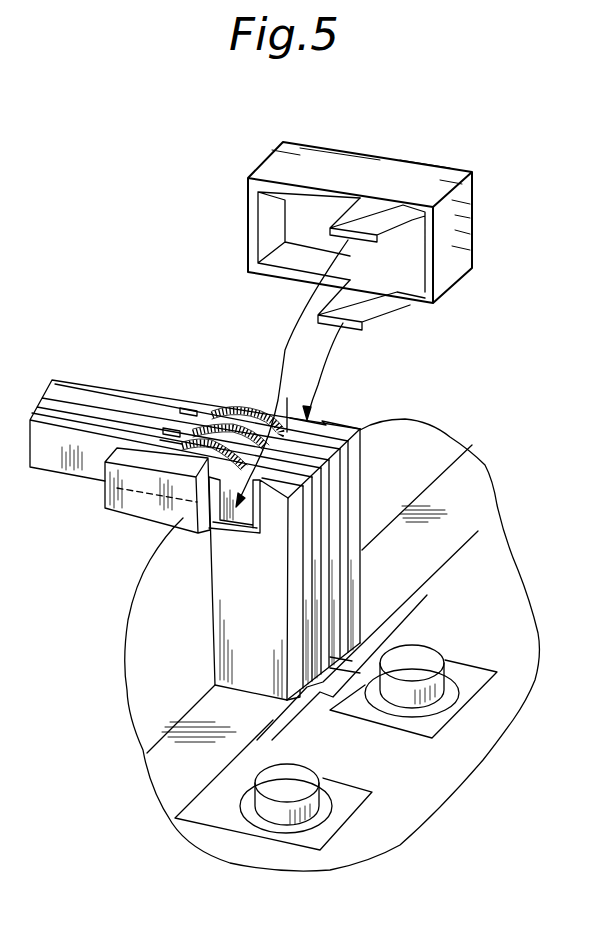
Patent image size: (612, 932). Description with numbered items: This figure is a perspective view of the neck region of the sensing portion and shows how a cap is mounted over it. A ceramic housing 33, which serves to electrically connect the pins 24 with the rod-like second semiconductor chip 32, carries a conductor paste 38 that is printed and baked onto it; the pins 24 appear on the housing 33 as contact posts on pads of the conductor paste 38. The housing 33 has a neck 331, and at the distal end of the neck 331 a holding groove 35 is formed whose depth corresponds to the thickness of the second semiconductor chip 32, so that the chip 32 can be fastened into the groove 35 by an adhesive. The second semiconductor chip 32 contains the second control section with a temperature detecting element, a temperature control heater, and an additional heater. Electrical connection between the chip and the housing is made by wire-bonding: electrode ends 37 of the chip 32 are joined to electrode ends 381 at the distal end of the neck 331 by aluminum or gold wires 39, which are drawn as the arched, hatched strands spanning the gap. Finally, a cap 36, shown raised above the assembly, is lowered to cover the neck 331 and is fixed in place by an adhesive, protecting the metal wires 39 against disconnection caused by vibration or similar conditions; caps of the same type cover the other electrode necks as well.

The pins 24 is at (297, 773).
The second semiconductor chip 32 is at (76, 390).
The ceramic housing 33 is at (492, 632).
The neck 331 is at (235, 602).
The holding groove 35 is at (118, 458).
The cap 36 is at (450, 235).
The electrode ends 37 is at (172, 428).
The conductor paste 38 is at (308, 497).
The electrode ends 381 is at (307, 442).
The wires 39 is at (220, 416).